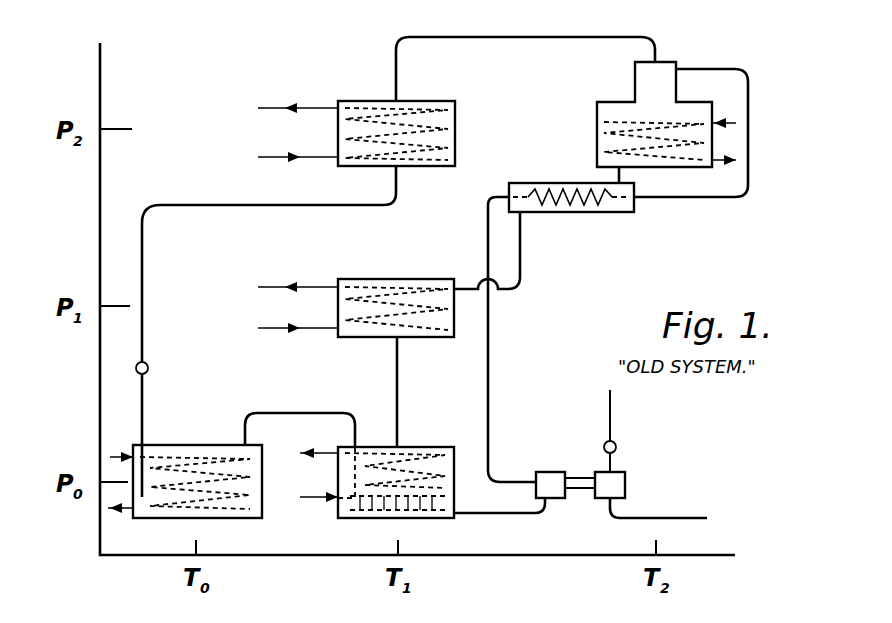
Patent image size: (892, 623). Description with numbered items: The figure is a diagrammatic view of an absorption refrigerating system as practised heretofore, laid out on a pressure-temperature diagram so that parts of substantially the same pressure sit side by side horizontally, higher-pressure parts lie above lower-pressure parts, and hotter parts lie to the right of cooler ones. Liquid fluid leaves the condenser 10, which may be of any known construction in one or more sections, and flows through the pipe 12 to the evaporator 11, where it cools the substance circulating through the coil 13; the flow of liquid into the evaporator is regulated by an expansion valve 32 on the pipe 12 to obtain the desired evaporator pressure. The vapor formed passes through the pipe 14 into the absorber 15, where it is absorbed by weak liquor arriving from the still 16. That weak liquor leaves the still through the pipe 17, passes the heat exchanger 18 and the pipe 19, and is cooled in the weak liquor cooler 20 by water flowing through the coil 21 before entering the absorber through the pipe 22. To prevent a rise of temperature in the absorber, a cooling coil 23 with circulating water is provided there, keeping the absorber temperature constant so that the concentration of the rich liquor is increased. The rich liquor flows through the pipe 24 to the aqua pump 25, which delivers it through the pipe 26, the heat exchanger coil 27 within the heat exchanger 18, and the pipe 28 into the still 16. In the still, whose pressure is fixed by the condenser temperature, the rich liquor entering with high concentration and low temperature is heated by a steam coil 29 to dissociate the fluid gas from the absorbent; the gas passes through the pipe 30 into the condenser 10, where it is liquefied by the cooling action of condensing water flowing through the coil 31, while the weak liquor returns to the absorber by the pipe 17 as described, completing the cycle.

The condenser 10 is at (456, 150).
The evaporator 11 is at (168, 445).
The pipe 12 is at (292, 208).
The coil 13 is at (208, 489).
The pipe 14 is at (284, 411).
The absorber 15 is at (412, 447).
The still 16 is at (662, 66).
The pipe 17 is at (620, 176).
The heat exchanger 18 is at (541, 213).
The pipe 19 is at (521, 275).
The weak liquor cooler 20 is at (388, 279).
The coil 21 is at (392, 318).
The pipe 22 is at (398, 406).
The cooling coil 23 is at (362, 492).
The pipe 24 is at (520, 515).
The aqua pump 25 is at (553, 488).
The pipe 26 is at (490, 362).
The heat exchanger coil 27 is at (600, 192).
The pipe 28 is at (749, 156).
The steam coil 29 is at (640, 138).
The pipe 30 is at (549, 38).
The coil 31 is at (380, 130).
The expansion valve 32 is at (148, 366).